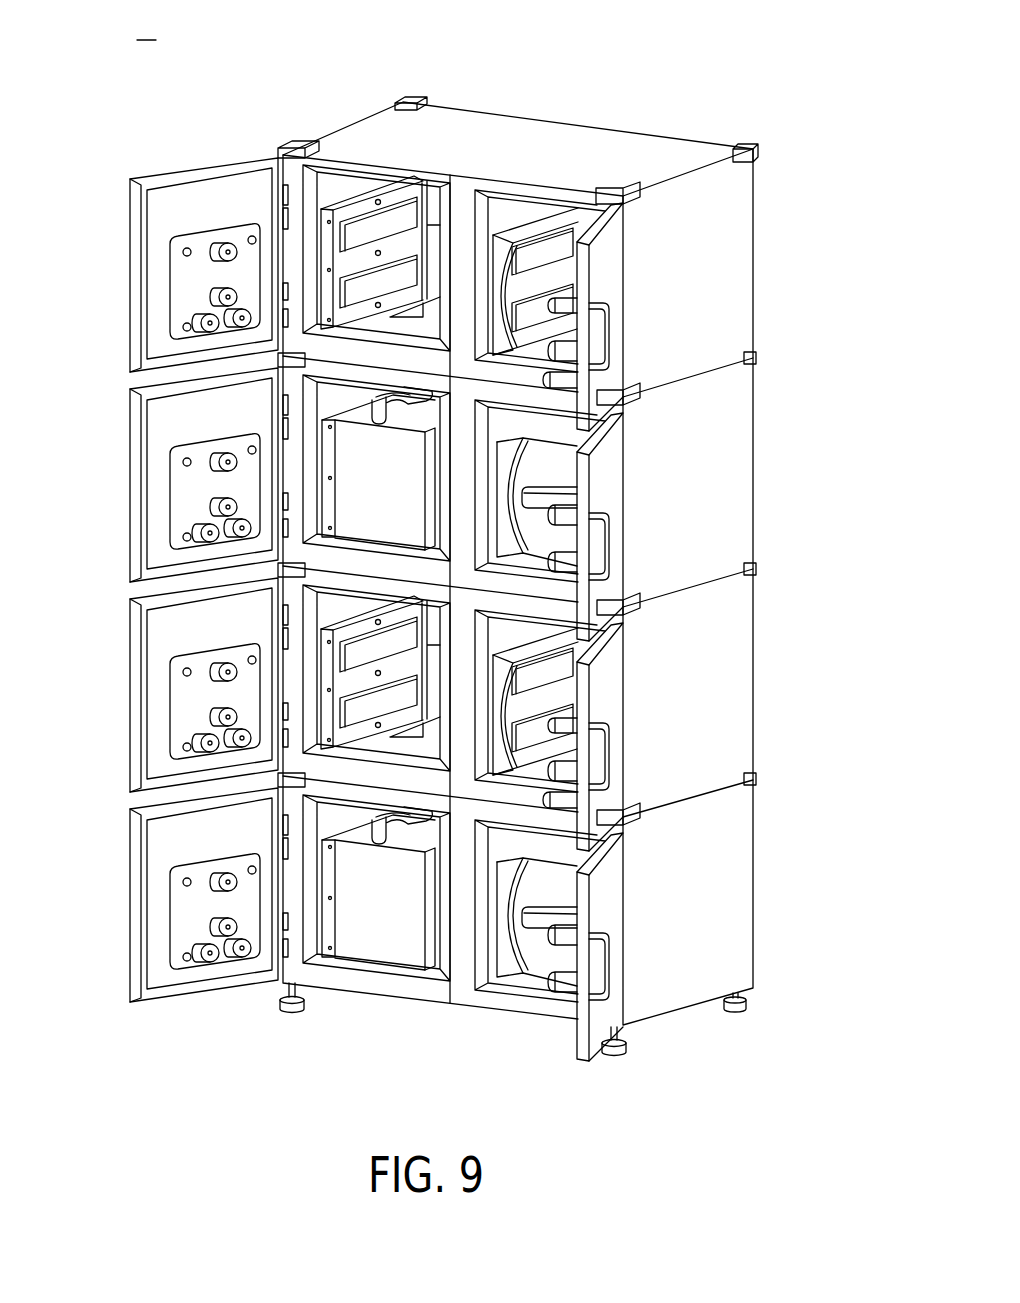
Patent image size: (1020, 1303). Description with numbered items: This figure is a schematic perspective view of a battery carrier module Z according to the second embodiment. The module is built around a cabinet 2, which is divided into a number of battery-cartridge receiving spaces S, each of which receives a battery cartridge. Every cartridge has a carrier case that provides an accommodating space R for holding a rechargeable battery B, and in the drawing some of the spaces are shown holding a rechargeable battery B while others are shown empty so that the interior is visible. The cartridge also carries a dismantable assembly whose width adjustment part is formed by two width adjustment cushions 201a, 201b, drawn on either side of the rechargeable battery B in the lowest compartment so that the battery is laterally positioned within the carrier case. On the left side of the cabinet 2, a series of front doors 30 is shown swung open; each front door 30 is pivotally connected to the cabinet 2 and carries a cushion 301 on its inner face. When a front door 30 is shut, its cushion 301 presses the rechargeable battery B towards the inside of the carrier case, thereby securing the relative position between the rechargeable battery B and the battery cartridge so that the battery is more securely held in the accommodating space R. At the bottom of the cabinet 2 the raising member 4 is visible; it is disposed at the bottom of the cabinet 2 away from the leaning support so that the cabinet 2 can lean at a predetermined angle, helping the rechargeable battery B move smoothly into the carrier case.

The cabinet 2 is at (737, 274).
The raising member 4 is at (290, 1014).
The front door 30 is at (157, 277).
The cushion 301 is at (196, 321).
The width adjustment cushion 201a is at (328, 953).
The width adjustment cushion 201b is at (428, 962).
The rechargeable battery B is at (378, 953).
The accommodating space R is at (358, 225).
The battery-cartridge receiving space S is at (307, 193).
The battery carrier module Z is at (146, 25).